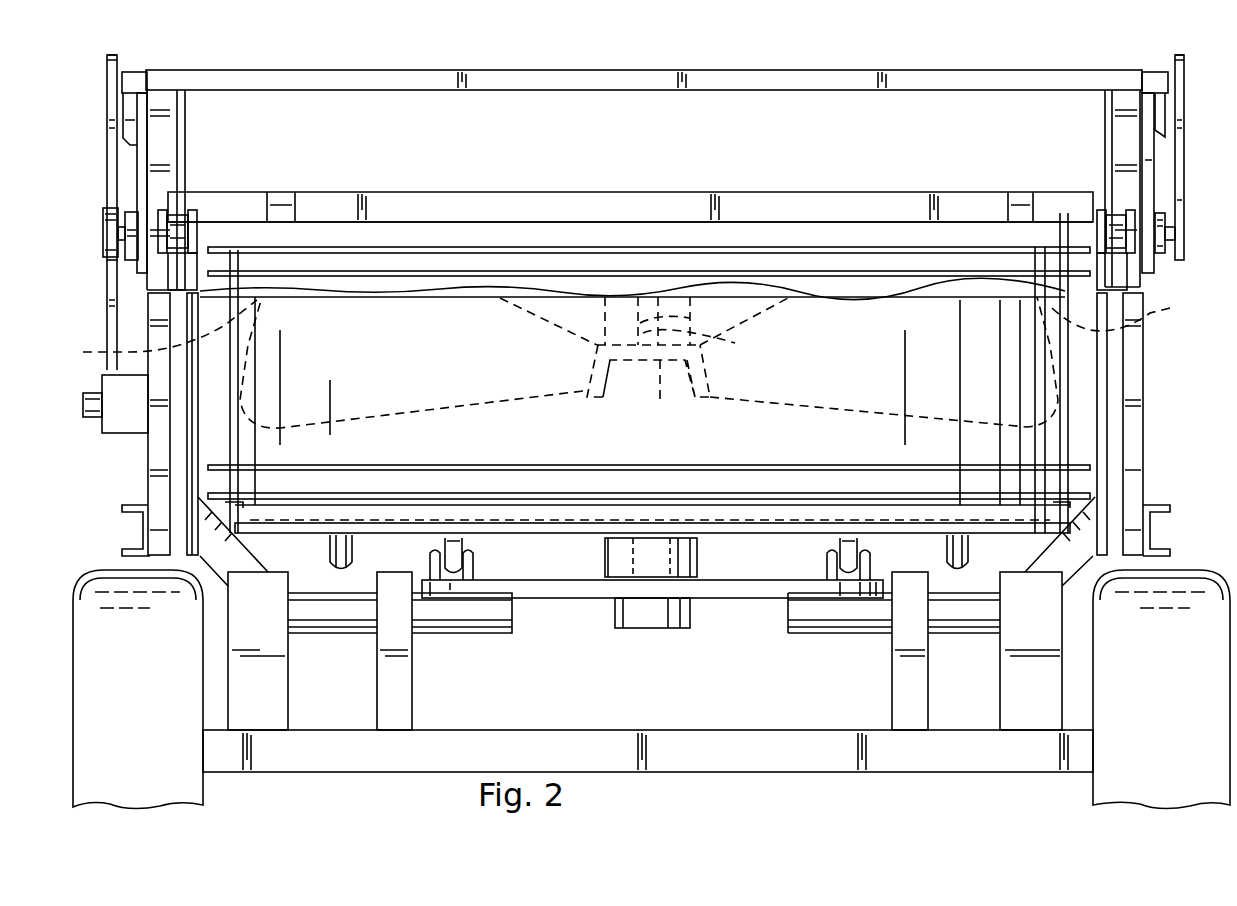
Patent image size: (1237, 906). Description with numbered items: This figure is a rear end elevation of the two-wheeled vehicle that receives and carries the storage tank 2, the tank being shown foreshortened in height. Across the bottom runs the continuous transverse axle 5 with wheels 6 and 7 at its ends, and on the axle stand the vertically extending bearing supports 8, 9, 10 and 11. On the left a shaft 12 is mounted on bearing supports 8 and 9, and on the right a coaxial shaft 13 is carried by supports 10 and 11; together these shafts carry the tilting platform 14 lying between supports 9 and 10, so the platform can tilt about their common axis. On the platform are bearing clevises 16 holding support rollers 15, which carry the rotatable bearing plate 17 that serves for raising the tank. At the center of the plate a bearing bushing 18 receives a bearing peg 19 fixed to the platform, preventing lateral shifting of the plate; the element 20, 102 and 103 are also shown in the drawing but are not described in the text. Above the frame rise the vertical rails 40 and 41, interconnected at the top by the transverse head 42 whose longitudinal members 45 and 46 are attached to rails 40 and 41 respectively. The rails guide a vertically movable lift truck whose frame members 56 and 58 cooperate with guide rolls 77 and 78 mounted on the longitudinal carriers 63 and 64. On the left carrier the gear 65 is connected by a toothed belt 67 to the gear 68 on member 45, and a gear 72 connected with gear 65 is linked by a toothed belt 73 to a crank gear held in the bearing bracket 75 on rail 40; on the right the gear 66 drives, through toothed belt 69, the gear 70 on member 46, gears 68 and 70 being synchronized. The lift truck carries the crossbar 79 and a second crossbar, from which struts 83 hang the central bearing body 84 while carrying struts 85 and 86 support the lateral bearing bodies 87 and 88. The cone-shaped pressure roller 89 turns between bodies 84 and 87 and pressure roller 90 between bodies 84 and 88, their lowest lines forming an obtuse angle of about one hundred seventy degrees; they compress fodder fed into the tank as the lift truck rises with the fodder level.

The storage tank 2 is at (1025, 445).
The axle 5 is at (778, 762).
The wheel 6 is at (110, 590).
The wheel 7 is at (1193, 595).
The bearing support 8 is at (272, 703).
The bearing support 9 is at (403, 680).
The bearing support 10 is at (905, 677).
The bearing support 11 is at (1017, 698).
The shaft 12 is at (358, 610).
The shaft 13 is at (945, 618).
The tilting platform 14 is at (583, 590).
The support roller 15 is at (447, 540).
The bearing clevis 16 is at (472, 572).
The bearing plate 17 is at (703, 528).
The bearing bushing 18 is at (620, 548).
The bearing peg 19 is at (637, 560).
The hanger 20 is at (957, 552).
The vertical rail 40 is at (160, 122).
The vertical rail 41 is at (1125, 125).
The transverse head 42 is at (634, 66).
The longitudinal member 45 is at (128, 78).
The longitudinal member 46 is at (1155, 72).
The frame member 56 is at (180, 452).
The frame member 58 is at (1117, 442).
The longitudinal carrier 63 is at (137, 208).
The carrier 64 is at (1160, 222).
The gear 65 is at (110, 222).
The gear 66 is at (1185, 245).
The toothed belt 67 is at (112, 170).
The gear 68 is at (108, 74).
The toothed belt 69 is at (1180, 168).
The gear 70 is at (1183, 78).
The gear 72 is at (105, 237).
The toothed belt 73 is at (108, 326).
The bearing bracket 75 is at (120, 405).
The guide roll 77 is at (180, 223).
The guide roll 78 is at (1105, 230).
The crossbar 79 is at (630, 188).
The strut 83 is at (645, 328).
The central supporting bearing body 84 is at (648, 387).
The carrying strut 85 is at (282, 230).
The carrying strut 86 is at (1015, 230).
The lateral bearing body 87 is at (157, 333).
The lateral bearing body 88 is at (1127, 314).
The pressure roller 89 is at (410, 418).
The pressure roller 90 is at (875, 415).
The guide plate 102 is at (140, 150).
The guide plate 103 is at (1150, 152).